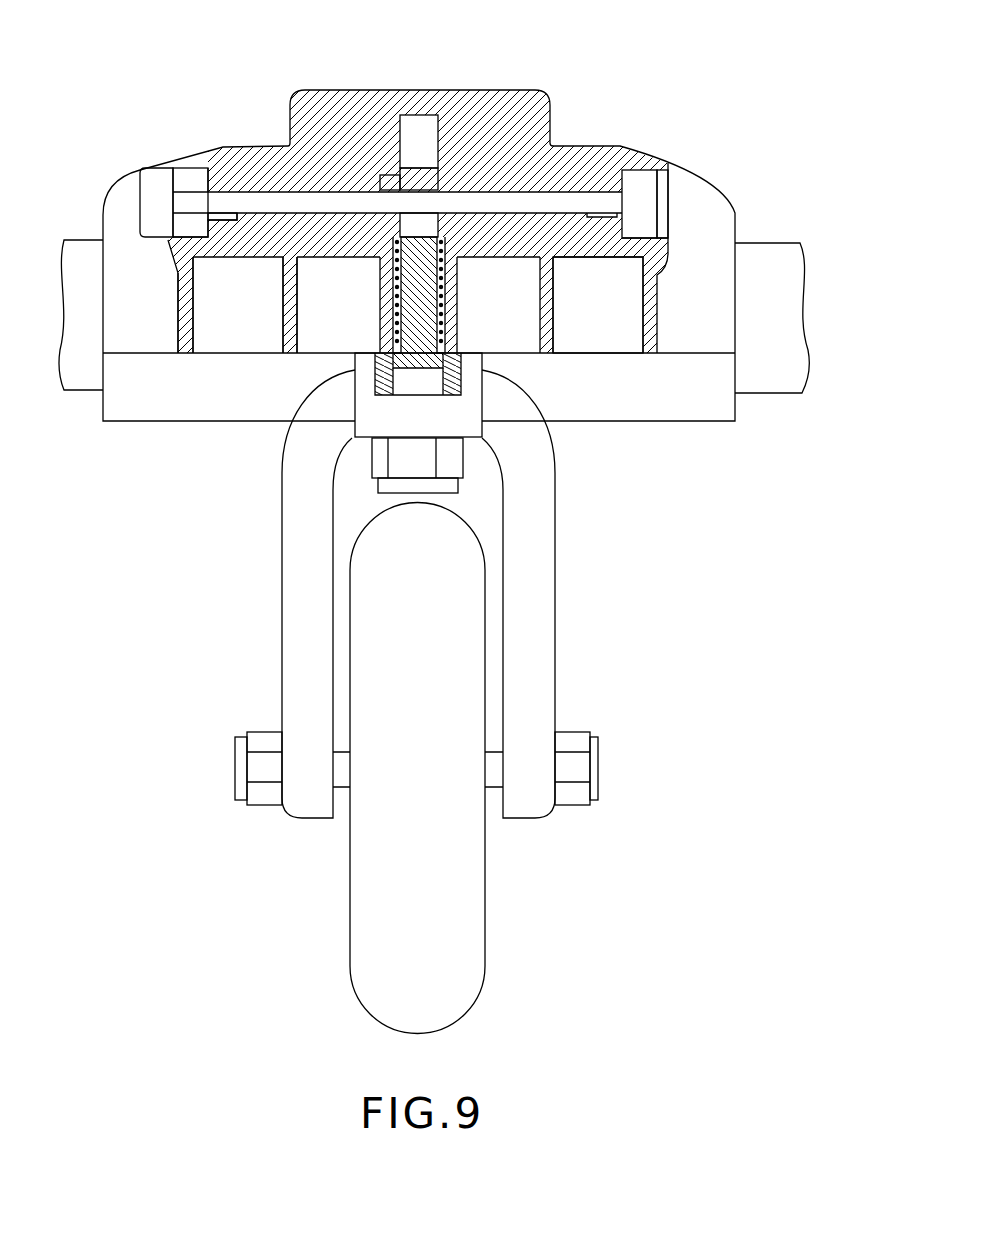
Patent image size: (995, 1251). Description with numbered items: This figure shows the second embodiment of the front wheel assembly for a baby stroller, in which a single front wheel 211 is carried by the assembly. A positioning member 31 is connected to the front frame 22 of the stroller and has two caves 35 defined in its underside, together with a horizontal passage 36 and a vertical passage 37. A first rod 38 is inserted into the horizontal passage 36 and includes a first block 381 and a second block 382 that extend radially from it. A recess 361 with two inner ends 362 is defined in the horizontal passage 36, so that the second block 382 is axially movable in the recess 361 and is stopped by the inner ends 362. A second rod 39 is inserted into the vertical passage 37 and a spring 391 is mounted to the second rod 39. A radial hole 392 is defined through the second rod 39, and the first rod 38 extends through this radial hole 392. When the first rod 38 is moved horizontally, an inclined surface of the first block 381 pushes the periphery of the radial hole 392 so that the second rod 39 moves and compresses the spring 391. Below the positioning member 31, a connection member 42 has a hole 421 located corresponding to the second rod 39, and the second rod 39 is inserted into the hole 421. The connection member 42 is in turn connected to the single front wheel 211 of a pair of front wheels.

The front frame 22 is at (76, 255).
The positioning member 31 is at (472, 102).
The caves 35 is at (608, 297).
The horizontal passage 36 is at (233, 188).
The recess 361 is at (240, 249).
The inner ends 362 is at (283, 257).
The vertical passage 37 is at (400, 123).
The first rod 38 is at (502, 202).
The first block 381 is at (380, 186).
The second block 382 is at (228, 217).
The second rod 39 is at (417, 346).
The spring 391 is at (450, 273).
The radial hole 392 is at (425, 188).
The connection member 42 is at (445, 417).
The hole 421 is at (430, 385).
The single front wheel 211 is at (362, 911).